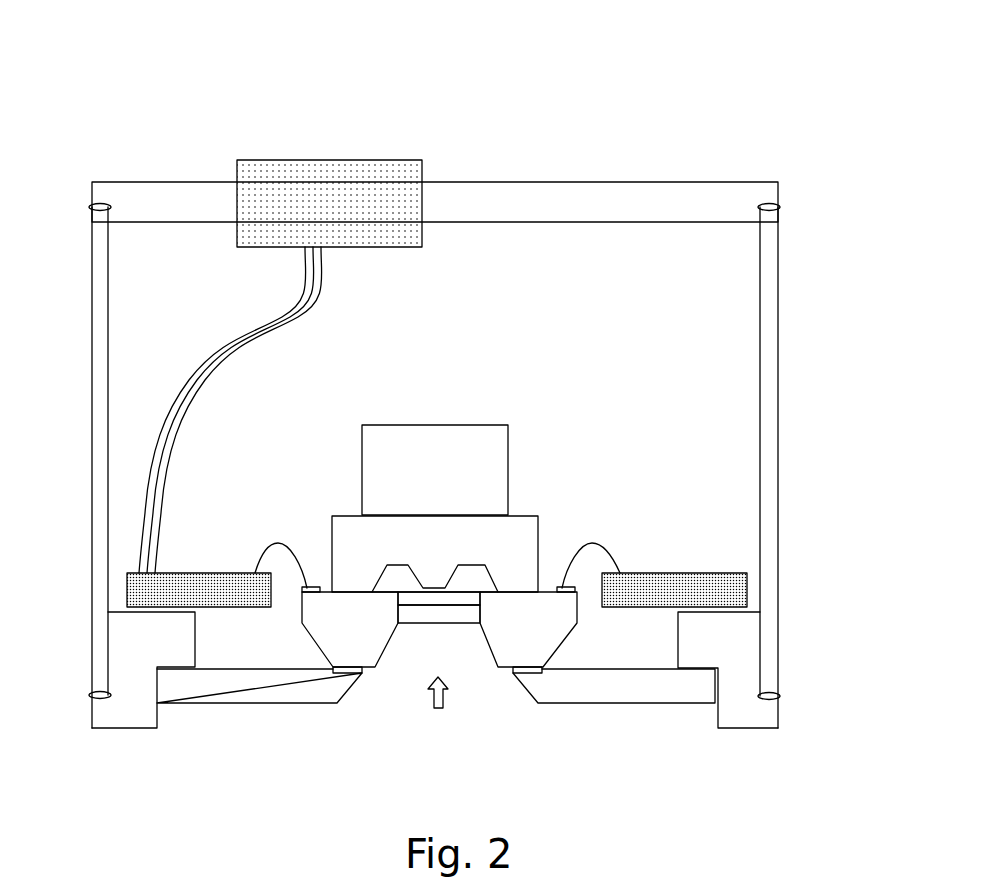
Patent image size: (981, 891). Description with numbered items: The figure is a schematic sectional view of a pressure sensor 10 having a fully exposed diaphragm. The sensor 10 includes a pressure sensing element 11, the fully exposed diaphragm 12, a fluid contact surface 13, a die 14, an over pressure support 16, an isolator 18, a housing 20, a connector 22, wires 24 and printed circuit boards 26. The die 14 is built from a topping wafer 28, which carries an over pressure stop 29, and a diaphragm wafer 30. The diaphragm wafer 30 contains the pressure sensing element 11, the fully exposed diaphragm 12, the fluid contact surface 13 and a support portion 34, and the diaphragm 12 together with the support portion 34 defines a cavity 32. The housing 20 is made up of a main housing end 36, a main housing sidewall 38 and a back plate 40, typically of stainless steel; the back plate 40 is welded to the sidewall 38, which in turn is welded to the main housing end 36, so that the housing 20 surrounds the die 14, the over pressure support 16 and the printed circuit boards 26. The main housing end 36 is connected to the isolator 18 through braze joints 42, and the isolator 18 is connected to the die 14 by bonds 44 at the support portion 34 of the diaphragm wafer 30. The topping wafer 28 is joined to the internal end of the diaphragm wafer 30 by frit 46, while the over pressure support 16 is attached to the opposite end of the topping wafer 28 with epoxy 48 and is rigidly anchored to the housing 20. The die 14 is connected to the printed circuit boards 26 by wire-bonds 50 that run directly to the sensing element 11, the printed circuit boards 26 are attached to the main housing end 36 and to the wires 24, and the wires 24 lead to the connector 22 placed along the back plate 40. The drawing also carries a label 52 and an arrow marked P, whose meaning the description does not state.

The pressure sensor 10 is at (706, 86).
The pressure sensing element 11 is at (435, 598).
The fully exposed diaphragm 12 is at (410, 613).
The fluid contact surface 13 is at (465, 624).
The die 14 is at (580, 473).
The over pressure support 16 is at (410, 425).
The isolator 18 is at (237, 705).
The housing 20 is at (94, 741).
The connector 22 is at (340, 160).
The wires 24 is at (218, 352).
The printed circuit boards 26 is at (193, 572).
The topping wafer 28 is at (433, 573).
The over pressure stop 29 is at (508, 515).
The diaphragm wafer 30 is at (312, 588).
The cavity 32 is at (465, 680).
The support portion 34 is at (567, 625).
The main housing end 36 is at (130, 728).
The main housing sidewall 38 is at (92, 467).
The back plate 40 is at (522, 182).
The braze joints 42 is at (678, 668).
The bonds 44 is at (345, 673).
The frit 46 is at (352, 592).
The epoxy 48 is at (480, 513).
The wire-bonds 50 is at (265, 547).
The connection 52 is at (140, 609).
The pressing force P is at (438, 707).